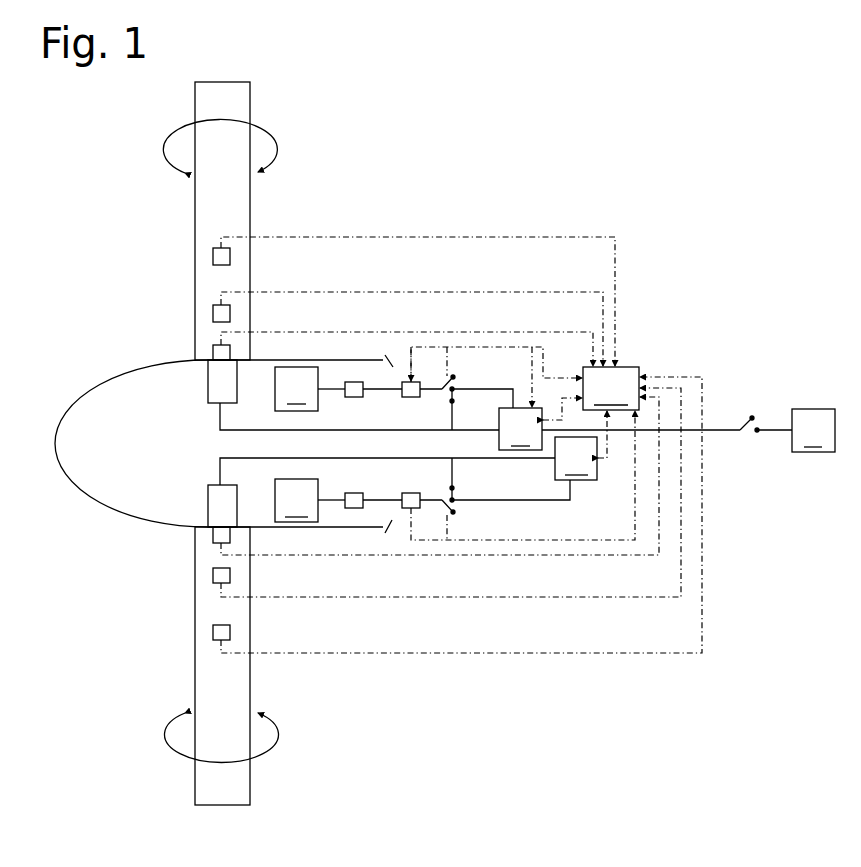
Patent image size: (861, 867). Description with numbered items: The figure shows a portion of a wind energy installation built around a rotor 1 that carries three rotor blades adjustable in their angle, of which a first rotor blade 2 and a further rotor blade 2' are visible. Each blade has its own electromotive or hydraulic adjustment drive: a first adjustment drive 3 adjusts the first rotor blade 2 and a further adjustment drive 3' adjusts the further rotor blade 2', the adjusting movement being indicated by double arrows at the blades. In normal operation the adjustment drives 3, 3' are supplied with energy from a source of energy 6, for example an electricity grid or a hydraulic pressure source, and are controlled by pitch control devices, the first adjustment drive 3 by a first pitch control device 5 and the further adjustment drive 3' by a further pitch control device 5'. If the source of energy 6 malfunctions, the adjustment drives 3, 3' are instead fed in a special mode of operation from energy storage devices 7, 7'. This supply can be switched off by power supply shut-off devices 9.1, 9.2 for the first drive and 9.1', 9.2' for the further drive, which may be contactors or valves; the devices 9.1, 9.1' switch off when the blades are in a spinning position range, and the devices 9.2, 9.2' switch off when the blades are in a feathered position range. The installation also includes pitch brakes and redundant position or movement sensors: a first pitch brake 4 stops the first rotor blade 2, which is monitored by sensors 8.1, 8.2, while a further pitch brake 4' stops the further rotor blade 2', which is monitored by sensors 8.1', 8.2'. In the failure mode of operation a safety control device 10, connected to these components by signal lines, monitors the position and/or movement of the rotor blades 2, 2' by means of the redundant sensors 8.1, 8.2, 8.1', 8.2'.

The rotor 1 is at (55, 445).
The first rotor blade 2 is at (225, 207).
The further rotor blade 2' is at (226, 681).
The adjustment drive 3 is at (204, 400).
The further adjustment drive 3' is at (204, 488).
The first pitch brake 4 is at (365, 309).
The further pitch brake 4' is at (397, 517).
The first pitch control device 5 is at (540, 424).
The further pitch control device 5' is at (581, 445).
The source of energy 6 is at (813, 430).
The energy storage device 7 is at (310, 389).
The energy storage device 7' is at (310, 500).
The sensor 8.1 is at (408, 303).
The sensor 8.2 is at (414, 269).
The sensor 8.1' is at (447, 518).
The sensor 8.2' is at (457, 549).
The power supply shut-off device 9.1 is at (492, 340).
The power supply shut-off device 9.2 is at (475, 282).
The power supply shut-off device 9.1' is at (518, 527).
The power supply shut-off device 9.2' is at (477, 610).
The safety control device 10 is at (611, 388).